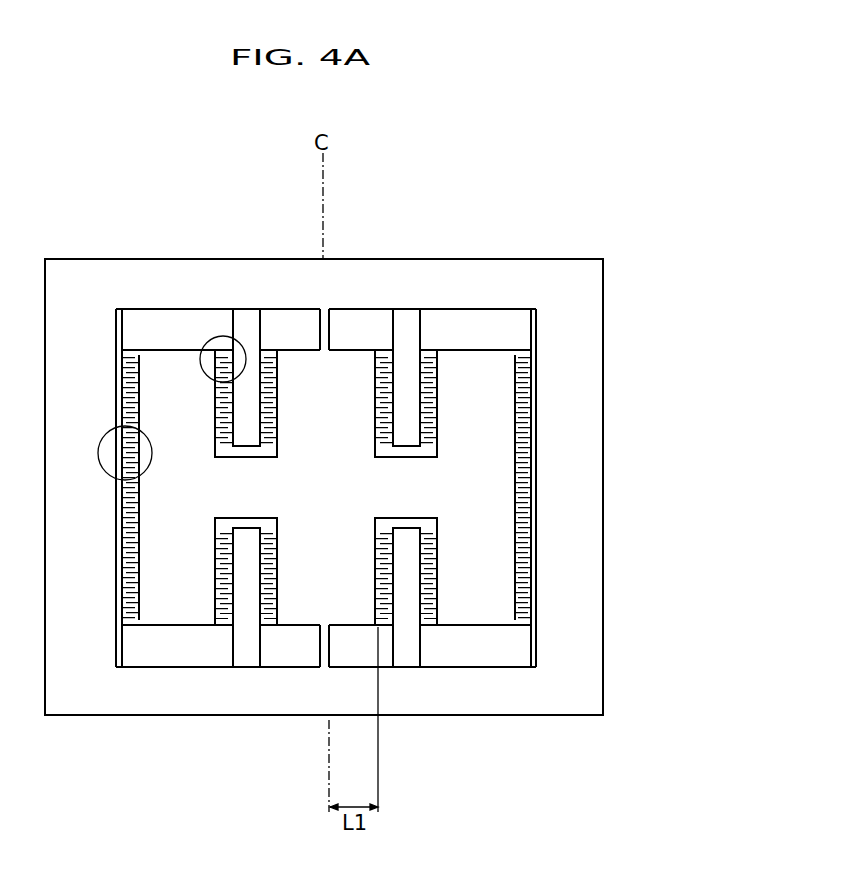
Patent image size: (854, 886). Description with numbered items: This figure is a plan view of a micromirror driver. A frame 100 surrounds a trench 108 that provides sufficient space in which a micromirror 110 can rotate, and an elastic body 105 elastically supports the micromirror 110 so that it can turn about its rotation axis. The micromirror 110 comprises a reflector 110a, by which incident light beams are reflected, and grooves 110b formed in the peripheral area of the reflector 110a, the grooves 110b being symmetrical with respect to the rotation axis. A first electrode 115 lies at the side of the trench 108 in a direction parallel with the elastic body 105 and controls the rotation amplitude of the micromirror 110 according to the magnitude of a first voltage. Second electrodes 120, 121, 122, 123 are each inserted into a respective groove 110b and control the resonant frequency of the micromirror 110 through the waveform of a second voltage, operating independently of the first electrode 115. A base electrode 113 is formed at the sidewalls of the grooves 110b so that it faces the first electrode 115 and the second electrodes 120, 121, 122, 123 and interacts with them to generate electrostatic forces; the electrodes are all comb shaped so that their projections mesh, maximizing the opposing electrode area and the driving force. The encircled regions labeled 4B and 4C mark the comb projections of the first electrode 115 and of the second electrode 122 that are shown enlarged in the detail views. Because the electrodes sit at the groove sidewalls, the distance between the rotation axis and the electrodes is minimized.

The frame 100 is at (582, 268).
The elastic body 105 is at (330, 326).
The trench 108 is at (500, 656).
The micromirror 110 is at (438, 515).
The reflector 110a is at (428, 470).
The groove 110b is at (438, 442).
The base electrode 113 is at (131, 628).
The first electrode 115 is at (533, 592).
The second electrode 120 is at (405, 656).
The second electrode 121 is at (412, 330).
The second electrode 122 is at (249, 320).
The second electrode 123 is at (248, 656).
The detail view circle 4B is at (106, 432).
The detail view circle 4C is at (223, 336).